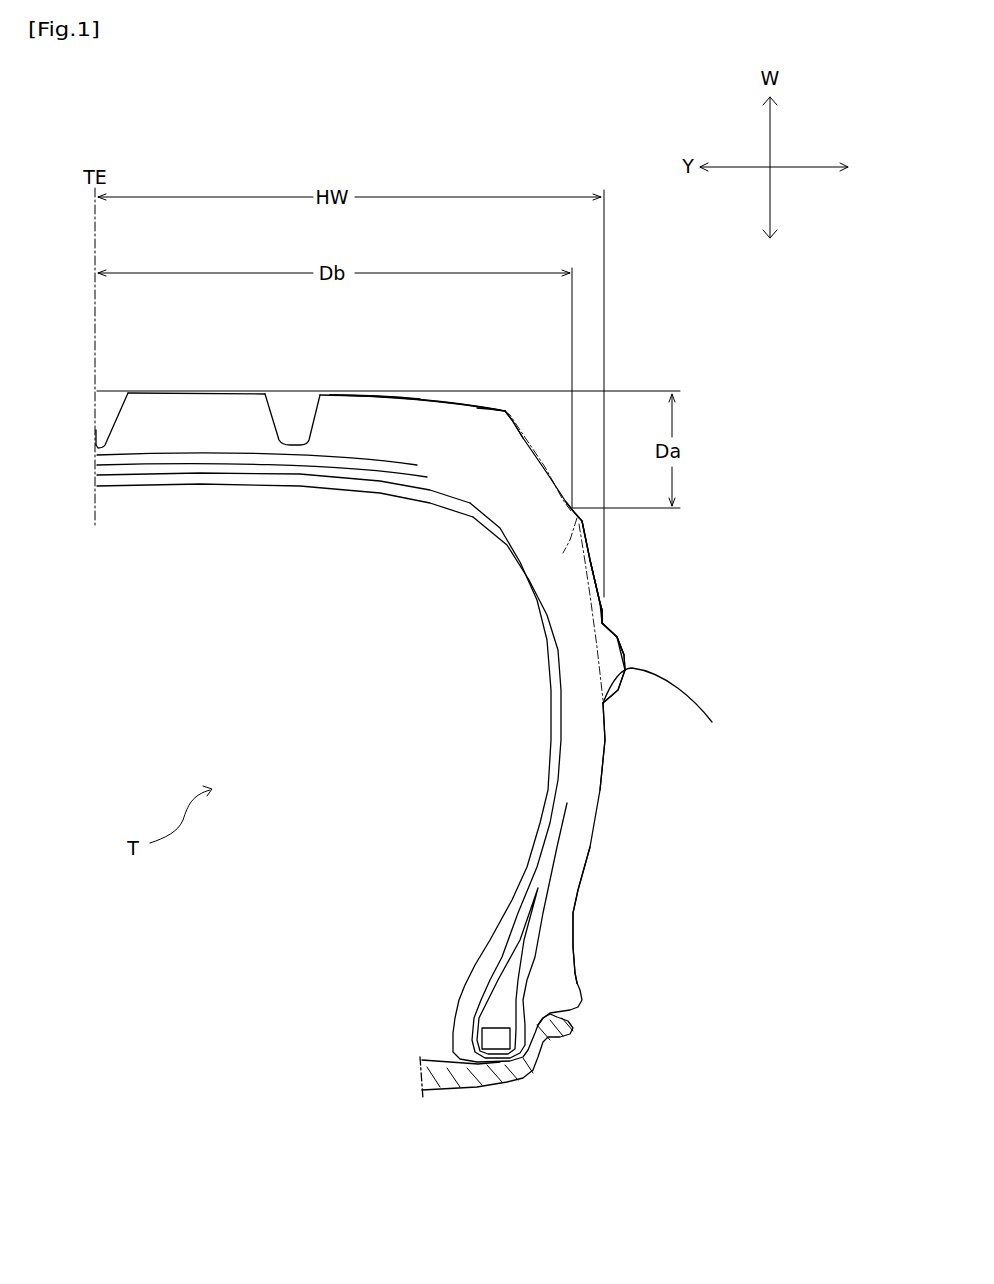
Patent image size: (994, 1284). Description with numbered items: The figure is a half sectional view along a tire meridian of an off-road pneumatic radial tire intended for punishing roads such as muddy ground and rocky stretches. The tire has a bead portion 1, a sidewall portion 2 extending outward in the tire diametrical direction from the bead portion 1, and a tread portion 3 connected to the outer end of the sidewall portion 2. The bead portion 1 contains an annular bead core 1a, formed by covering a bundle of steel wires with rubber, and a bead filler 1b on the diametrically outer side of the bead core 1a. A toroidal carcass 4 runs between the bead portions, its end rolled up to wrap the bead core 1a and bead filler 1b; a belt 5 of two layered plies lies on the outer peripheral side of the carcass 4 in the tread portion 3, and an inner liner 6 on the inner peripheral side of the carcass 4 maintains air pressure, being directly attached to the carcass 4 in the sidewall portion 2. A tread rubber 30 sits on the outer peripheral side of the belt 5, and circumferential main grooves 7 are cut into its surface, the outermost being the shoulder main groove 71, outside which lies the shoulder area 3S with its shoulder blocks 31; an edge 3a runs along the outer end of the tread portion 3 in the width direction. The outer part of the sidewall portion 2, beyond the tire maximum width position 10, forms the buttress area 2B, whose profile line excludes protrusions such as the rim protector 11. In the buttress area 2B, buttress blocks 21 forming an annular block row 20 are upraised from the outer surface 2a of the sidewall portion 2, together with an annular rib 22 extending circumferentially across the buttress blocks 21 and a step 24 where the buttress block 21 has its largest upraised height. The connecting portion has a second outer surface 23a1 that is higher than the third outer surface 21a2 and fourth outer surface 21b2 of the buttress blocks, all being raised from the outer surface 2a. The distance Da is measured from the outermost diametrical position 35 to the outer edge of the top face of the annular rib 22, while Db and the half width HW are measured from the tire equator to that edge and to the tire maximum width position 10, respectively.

The bead portion 1 is at (502, 1063).
The bead core 1a is at (482, 1029).
The bead filler 1b is at (500, 966).
The sidewall portion 2 is at (605, 757).
The outer surface of the sidewall portion 2a is at (560, 647).
The buttress area 2B is at (708, 350).
The tread portion 3 is at (165, 390).
The edge 3a is at (478, 408).
The shoulder area 3S is at (508, 362).
The carcass 4 is at (152, 477).
The belt 5 is at (227, 465).
The inner liner 6 is at (298, 487).
The main groove 7 is at (108, 397).
The shoulder main groove 71 is at (293, 402).
The tire maximum width position 10 is at (605, 720).
The rim protector 11 is at (575, 975).
The annular block row 20 is at (736, 675).
The buttress block 21 is at (606, 608).
The annular rib 22 is at (583, 513).
The step 24 is at (622, 650).
The third outer surface 21a2 is at (608, 625).
The fourth outer surface 21b2 is at (719, 621).
The second outer surface 23a1 is at (630, 676).
The tread rubber 30 is at (213, 420).
The shoulder block 31 is at (477, 408).
The outermost diametrical position 35 is at (96, 390).